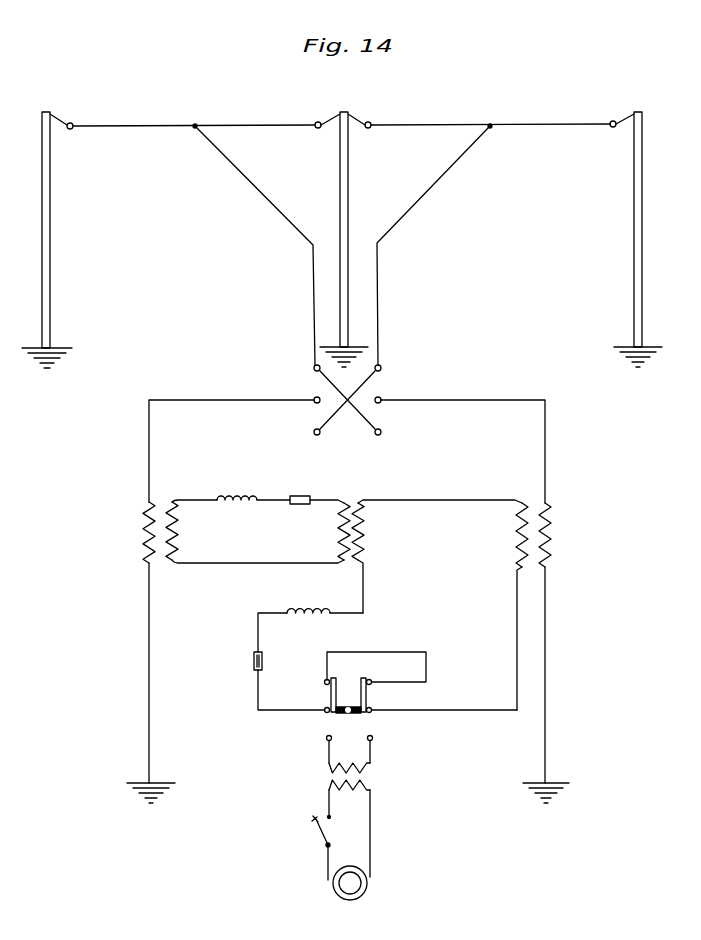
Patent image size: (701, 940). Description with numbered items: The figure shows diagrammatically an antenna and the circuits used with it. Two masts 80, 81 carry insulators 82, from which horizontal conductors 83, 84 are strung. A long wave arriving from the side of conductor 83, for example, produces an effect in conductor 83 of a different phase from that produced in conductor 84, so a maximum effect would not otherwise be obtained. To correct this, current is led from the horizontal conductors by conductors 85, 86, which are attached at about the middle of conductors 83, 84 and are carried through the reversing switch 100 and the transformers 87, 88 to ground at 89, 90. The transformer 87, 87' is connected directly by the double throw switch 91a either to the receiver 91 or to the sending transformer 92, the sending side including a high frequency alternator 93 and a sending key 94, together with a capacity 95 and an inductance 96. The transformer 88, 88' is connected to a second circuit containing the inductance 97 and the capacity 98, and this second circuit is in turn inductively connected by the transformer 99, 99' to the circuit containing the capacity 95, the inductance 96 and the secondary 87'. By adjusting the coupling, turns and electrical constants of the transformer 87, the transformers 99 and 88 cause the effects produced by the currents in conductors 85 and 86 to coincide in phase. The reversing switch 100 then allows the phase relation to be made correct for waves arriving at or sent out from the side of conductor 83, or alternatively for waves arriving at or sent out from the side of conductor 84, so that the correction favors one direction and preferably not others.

The mast 80 is at (634, 250).
The mast 81 is at (52, 252).
The insulator 82 is at (72, 123).
The horizontal conductor 83 is at (543, 123).
The horizontal conductor 84 is at (148, 124).
The conductor 85 is at (428, 192).
The conductor 86 is at (247, 180).
The transformer 87 is at (557, 535).
The secondary 87' is at (502, 535).
The transformer 88 is at (133, 532).
The transformer secondary 88' is at (191, 531).
The ground 89 is at (540, 782).
The ground 90 is at (168, 782).
The receiver 91 is at (408, 658).
The double throw switch 91a is at (350, 686).
The sending transformer 92 is at (371, 778).
The high frequency alternator 93 is at (362, 896).
The sending key 94 is at (314, 832).
The capacity 95 is at (253, 658).
The inductance 96 is at (312, 612).
The inductance 97 is at (240, 496).
The capacity 98 is at (300, 496).
The transformer 99 is at (352, 519).
The transformer secondary 99' is at (378, 531).
The reversing switch 100 is at (382, 396).